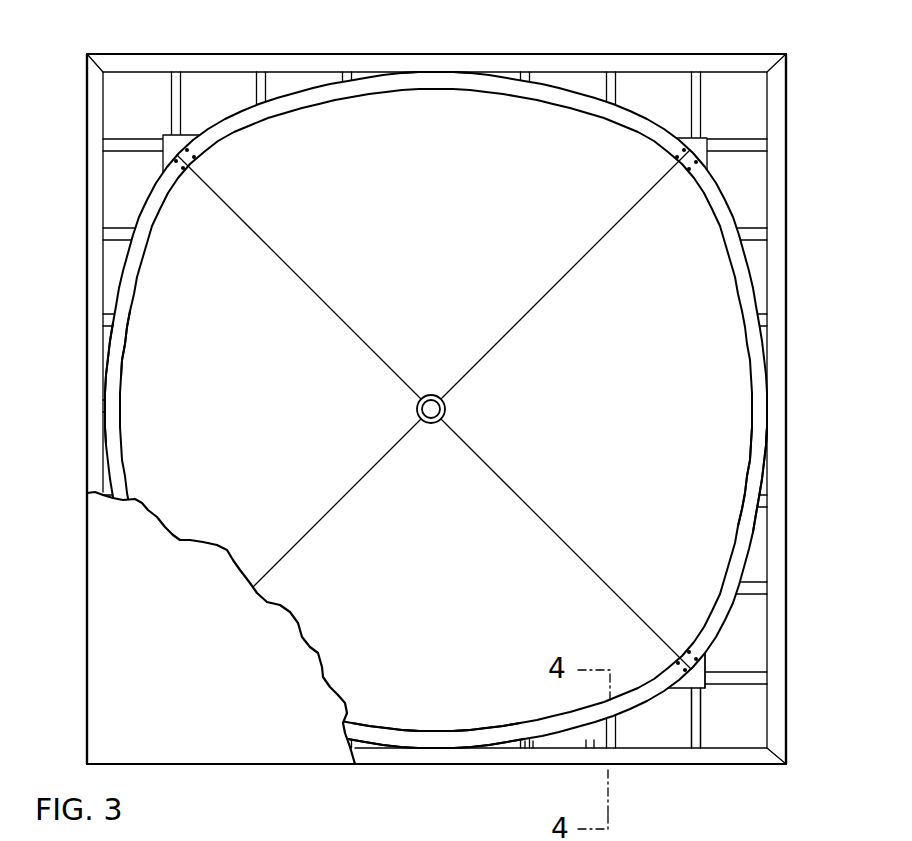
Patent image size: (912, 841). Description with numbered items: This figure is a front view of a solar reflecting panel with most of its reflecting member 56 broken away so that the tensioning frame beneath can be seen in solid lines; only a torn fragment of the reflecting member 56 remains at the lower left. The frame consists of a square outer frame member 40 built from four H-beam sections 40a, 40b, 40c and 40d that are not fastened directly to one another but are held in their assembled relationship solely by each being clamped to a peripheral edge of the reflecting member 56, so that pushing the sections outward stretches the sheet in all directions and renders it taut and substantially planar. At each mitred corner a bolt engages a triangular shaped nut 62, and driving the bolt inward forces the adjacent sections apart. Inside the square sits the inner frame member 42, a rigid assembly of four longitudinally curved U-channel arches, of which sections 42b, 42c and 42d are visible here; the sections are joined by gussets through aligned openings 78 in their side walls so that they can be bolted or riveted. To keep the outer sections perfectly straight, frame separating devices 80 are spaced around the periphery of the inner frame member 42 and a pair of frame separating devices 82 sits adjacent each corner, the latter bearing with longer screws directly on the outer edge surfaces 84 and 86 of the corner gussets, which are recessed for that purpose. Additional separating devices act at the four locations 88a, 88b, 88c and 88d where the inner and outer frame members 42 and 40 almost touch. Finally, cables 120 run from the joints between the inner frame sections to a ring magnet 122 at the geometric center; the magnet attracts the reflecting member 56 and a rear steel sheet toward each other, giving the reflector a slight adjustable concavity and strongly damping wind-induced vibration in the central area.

The outer frame member 40 is at (797, 287).
The outer frame member section 40a is at (250, 54).
The outer frame member section 40b is at (87, 380).
The outer frame member section 40c is at (655, 766).
The outer frame member section 40d is at (786, 482).
The inner frame member 42 is at (722, 312).
The inner frame member section 42b is at (134, 290).
The inner frame member section 42c is at (360, 722).
The inner frame member section 42d is at (742, 482).
The reflecting member 56 is at (172, 530).
The triangular shaped nut 62 is at (112, 73).
The openings 78 is at (690, 175).
The frame separating devices 80 is at (590, 740).
The frame separating devices 82 is at (732, 140).
The outer edge surface 84 is at (706, 664).
The outer edge surface 86 is at (677, 690).
The location 88a is at (436, 74).
The location 88b is at (107, 411).
The location 88c is at (433, 731).
The location 88d is at (760, 410).
The cables 120 is at (287, 262).
The ring magnet 122 is at (446, 408).